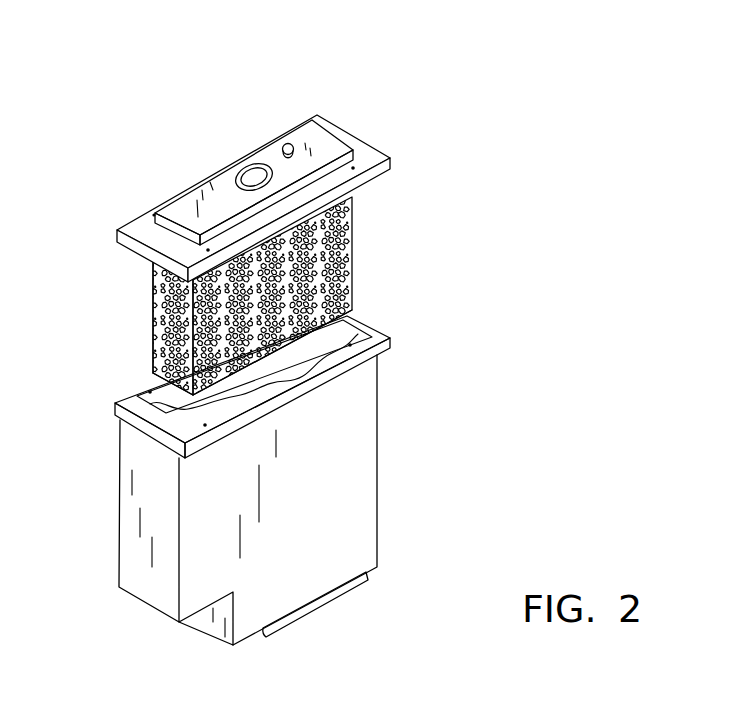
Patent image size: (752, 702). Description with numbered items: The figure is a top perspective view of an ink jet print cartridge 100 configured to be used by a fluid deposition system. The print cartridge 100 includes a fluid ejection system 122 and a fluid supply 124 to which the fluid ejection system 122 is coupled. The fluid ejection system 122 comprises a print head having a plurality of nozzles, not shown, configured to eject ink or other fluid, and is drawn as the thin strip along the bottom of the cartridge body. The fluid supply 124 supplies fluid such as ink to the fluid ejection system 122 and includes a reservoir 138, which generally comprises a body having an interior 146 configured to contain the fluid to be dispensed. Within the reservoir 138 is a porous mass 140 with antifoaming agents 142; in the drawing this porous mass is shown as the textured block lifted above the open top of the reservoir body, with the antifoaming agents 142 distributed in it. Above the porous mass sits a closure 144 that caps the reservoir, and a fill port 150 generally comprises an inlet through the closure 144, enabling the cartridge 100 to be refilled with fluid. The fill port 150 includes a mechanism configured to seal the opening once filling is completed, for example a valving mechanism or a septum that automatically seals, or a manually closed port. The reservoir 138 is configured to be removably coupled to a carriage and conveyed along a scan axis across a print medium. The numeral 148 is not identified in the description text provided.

The ink jet print cartridge 100 is at (120, 89).
The fluid ejection system 122 is at (322, 606).
The fluid supply 124 is at (269, 481).
The reservoir 138 is at (360, 487).
The porous mass 140 is at (152, 355).
The antifoaming agents 142 is at (152, 288).
The closure 144 is at (228, 163).
The interior 146 is at (147, 396).
The porous ink absorbing foam 148 is at (157, 303).
The fill port 150 is at (287, 141).